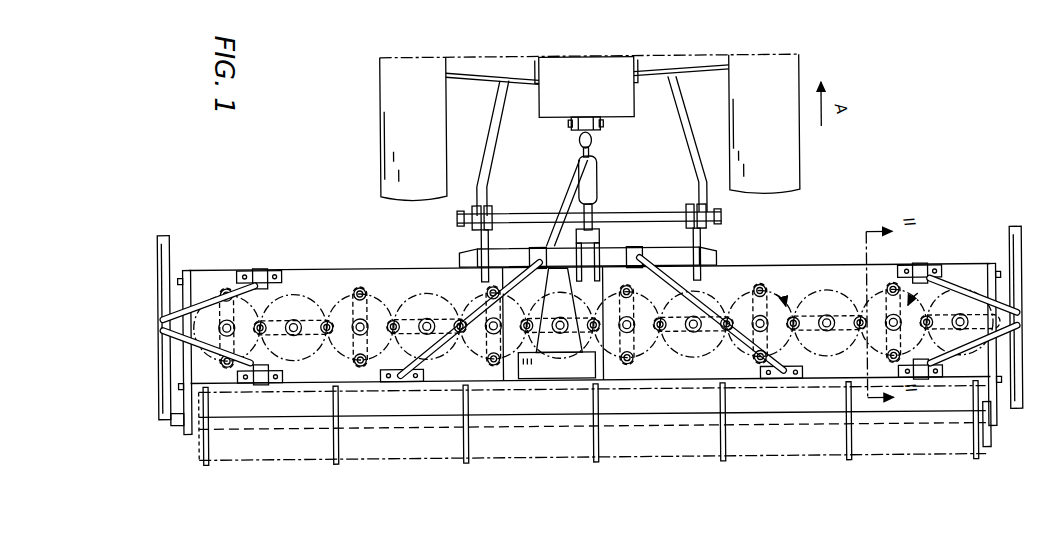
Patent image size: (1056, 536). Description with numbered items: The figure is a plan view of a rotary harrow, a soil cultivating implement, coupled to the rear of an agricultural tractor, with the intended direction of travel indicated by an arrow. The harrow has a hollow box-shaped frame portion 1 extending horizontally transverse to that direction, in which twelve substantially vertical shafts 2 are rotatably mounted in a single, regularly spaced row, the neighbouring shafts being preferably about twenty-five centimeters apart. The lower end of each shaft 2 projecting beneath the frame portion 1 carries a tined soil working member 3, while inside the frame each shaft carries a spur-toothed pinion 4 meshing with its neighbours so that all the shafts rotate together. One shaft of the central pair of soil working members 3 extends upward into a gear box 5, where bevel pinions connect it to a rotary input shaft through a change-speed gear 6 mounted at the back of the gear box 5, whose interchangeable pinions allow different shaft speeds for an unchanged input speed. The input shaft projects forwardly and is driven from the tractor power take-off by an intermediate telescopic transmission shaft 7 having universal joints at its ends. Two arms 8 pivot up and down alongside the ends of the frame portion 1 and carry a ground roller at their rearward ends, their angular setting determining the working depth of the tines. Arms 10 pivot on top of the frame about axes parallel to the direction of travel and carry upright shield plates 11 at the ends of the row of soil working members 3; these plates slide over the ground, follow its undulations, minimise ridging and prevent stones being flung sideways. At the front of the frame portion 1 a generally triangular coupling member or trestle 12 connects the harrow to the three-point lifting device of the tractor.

The hollow box-shaped frame portion 1 is at (364, 266).
The shafts 2 is at (401, 303).
The tined soil working member 3 is at (567, 192).
The spur-toothed pinion 4 is at (311, 304).
The gear box 5 is at (573, 346).
The change-speed gear 6 is at (546, 372).
The intermediate telescopic transmission shaft 7 is at (801, 458).
The arms 8 is at (186, 424).
The arms 10 is at (152, 313).
The shield plates 11 is at (170, 255).
The coupling member or trestle 12 is at (668, 217).